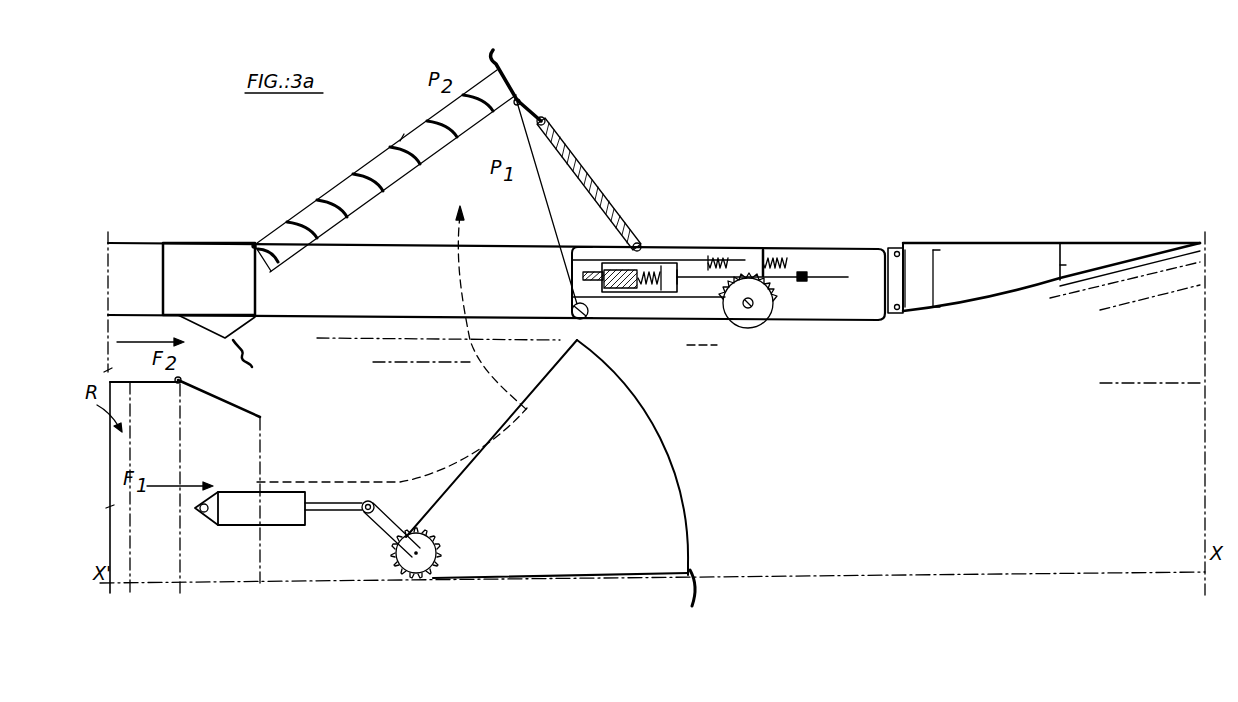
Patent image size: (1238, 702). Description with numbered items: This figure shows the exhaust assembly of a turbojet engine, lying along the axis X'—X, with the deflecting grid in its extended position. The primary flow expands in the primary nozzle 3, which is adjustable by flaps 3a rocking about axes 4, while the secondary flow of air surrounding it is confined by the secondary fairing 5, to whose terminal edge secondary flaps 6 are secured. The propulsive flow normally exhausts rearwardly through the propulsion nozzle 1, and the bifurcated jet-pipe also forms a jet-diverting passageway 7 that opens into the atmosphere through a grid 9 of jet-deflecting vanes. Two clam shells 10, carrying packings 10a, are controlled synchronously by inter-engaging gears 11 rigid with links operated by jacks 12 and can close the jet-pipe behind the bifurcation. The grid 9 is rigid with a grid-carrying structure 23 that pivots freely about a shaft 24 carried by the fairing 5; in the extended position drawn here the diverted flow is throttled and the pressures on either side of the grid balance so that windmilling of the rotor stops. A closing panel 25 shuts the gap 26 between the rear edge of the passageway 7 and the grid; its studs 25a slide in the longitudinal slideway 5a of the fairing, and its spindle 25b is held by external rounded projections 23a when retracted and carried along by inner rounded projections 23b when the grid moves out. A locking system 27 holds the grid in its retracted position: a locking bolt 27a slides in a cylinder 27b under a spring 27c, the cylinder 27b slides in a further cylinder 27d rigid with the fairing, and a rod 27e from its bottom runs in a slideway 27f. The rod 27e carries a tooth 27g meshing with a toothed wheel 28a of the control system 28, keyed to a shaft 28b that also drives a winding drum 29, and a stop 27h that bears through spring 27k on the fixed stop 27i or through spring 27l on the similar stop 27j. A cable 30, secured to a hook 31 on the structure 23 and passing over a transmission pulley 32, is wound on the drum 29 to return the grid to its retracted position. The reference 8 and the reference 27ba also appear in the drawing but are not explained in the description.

The propulsion nozzle 1 is at (997, 477).
The primary nozzle 3 is at (231, 468).
The flaps 3a is at (200, 391).
The axes 4 is at (176, 385).
The secondary fairing 5 is at (181, 242).
The longitudinal slideway 5a is at (680, 213).
The secondary flaps 6 is at (955, 258).
The jet-diverting passageway 7 is at (360, 298).
The axis line 8 is at (392, 320).
The grid of jet-deflecting vanes 9 is at (399, 126).
The clam shells 10 is at (668, 495).
The packings 10a is at (699, 598).
The inter-engaging gears 11 is at (412, 555).
The jacks 12 is at (282, 515).
The grid-carrying structure 23 is at (347, 180).
The external rounded projections 23a is at (503, 63).
The inner rounded projections 23b is at (541, 127).
The shaft 24 is at (253, 244).
The closing panel 25 is at (596, 190).
The stud 25a is at (640, 242).
The spindle 25b is at (547, 117).
The gap 26 is at (582, 192).
The locking system 27 is at (628, 304).
The locking bolt 27a is at (593, 270).
The cylinder 27b is at (627, 242).
The housing lower wall 27ba is at (593, 292).
The spring 27c is at (657, 300).
The cylinder 27d is at (683, 295).
The rod 27e is at (848, 278).
The slideway 27f is at (813, 280).
The tooth 27g is at (777, 280).
The stop 27h is at (762, 257).
The further stop 27i is at (790, 262).
The similar stop 27j is at (712, 257).
The spring 27k is at (783, 257).
The spring 27l is at (730, 257).
The control system 28 is at (747, 345).
The toothed wheel 28a is at (733, 295).
The shaft 28b is at (740, 322).
The winding drum 29 is at (757, 318).
The cable 30 is at (541, 189).
The hook 31 is at (522, 100).
The transmission pulley 32 is at (572, 308).